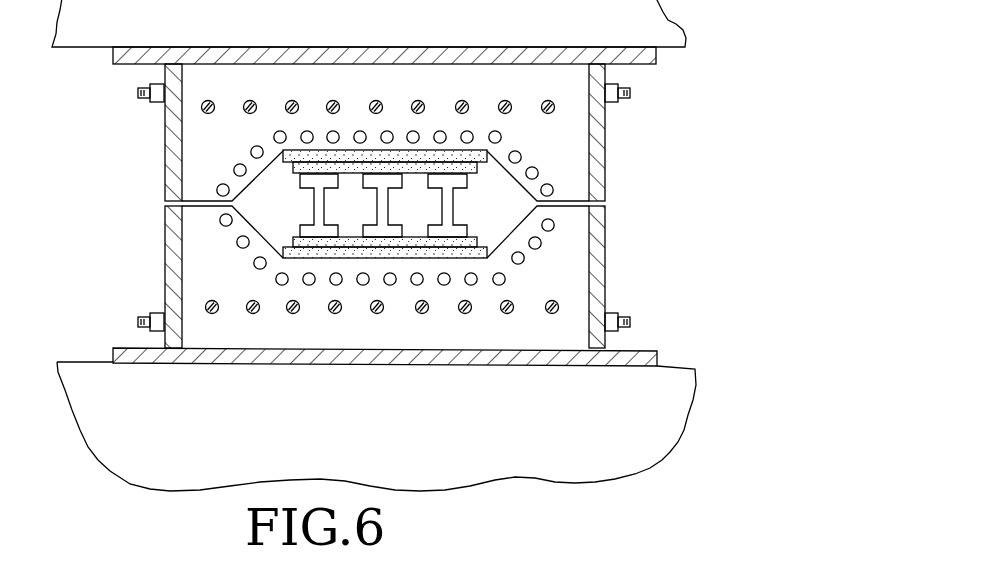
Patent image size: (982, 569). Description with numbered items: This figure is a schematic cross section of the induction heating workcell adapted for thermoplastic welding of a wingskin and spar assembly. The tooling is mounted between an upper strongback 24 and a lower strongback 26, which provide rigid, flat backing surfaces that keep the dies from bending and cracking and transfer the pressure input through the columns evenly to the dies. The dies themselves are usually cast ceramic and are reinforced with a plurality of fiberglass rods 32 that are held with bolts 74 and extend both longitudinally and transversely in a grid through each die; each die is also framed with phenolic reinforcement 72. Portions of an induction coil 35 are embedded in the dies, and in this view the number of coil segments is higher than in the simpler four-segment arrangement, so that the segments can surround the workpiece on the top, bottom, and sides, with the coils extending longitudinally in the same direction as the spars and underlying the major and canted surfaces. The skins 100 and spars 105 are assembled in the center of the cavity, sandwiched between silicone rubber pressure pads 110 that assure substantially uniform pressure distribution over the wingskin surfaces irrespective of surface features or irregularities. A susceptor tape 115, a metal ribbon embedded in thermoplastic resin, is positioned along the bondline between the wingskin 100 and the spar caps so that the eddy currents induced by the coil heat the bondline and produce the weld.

The upper strongback 24 is at (668, 21).
The lower strongback 26 is at (665, 452).
The fiberglass rods 32 is at (547, 104).
The induction coil 35 is at (551, 185).
The phenolic reinforcement 72 is at (163, 110).
The bolts 74 is at (614, 104).
The skins 100 is at (387, 235).
The spars 105 is at (376, 203).
The silicone rubber pressure pads 110 is at (488, 157).
The susceptor tape 115 is at (293, 238).